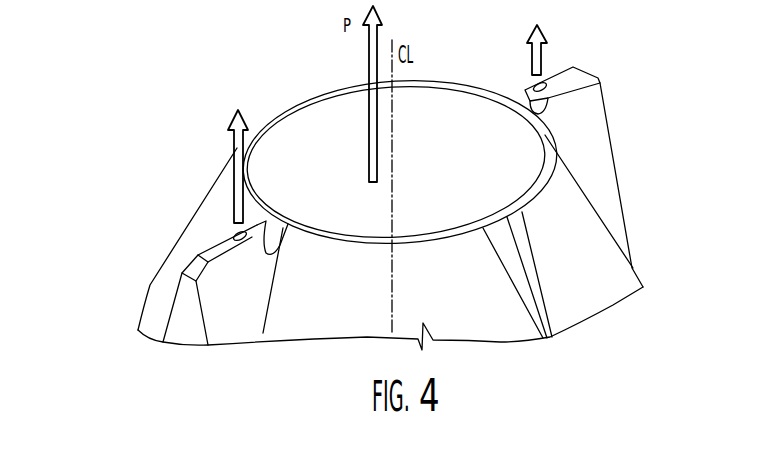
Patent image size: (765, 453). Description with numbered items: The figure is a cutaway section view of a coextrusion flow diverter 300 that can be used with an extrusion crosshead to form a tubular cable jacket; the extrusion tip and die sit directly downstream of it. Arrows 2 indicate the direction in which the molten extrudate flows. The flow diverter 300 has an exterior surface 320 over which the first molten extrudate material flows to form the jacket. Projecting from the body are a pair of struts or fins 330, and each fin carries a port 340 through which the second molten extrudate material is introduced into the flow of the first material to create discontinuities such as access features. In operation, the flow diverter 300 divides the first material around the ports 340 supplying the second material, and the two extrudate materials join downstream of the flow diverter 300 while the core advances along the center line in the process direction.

The coextrusion flow diverter 300 is at (127, 291).
The exterior surface 320 is at (218, 197).
The struts or fins 330 is at (187, 295).
The port 340 is at (240, 235).
The arrows 2 is at (387, 113).